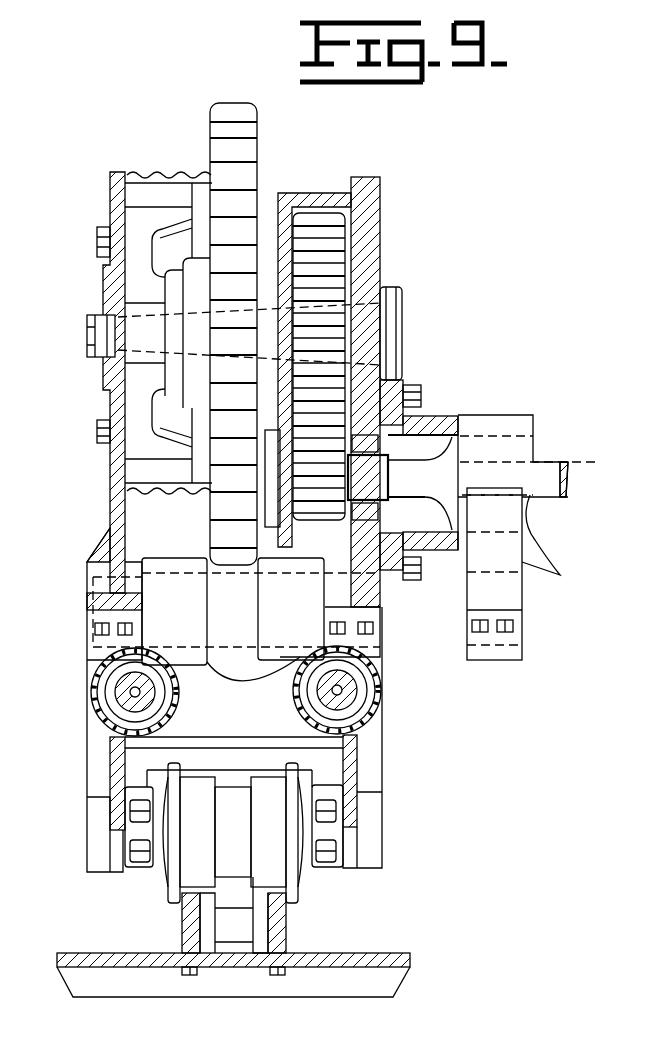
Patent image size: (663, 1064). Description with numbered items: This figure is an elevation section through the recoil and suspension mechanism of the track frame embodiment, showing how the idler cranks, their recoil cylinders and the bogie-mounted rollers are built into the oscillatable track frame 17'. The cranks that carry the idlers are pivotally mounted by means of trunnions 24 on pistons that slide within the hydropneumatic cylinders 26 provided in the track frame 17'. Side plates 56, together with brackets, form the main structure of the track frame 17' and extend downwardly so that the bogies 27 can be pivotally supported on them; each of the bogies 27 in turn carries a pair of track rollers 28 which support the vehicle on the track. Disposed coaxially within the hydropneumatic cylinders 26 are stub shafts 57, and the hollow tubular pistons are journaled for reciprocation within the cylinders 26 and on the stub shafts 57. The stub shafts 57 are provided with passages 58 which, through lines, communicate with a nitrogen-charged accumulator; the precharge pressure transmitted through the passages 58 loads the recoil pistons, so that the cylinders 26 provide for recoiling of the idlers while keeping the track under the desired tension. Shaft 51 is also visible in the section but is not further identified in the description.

The trunnions 24 is at (250, 149).
The side plates 56 is at (108, 211).
The drive shaft 51 is at (480, 418).
The hydropneumatic cylinders 26 is at (442, 637).
The oscillatable track frame 17' is at (197, 583).
The bogies 27 is at (190, 556).
The stub shafts 57 is at (127, 683).
The passages 58 is at (128, 698).
The track rollers 28 is at (185, 875).